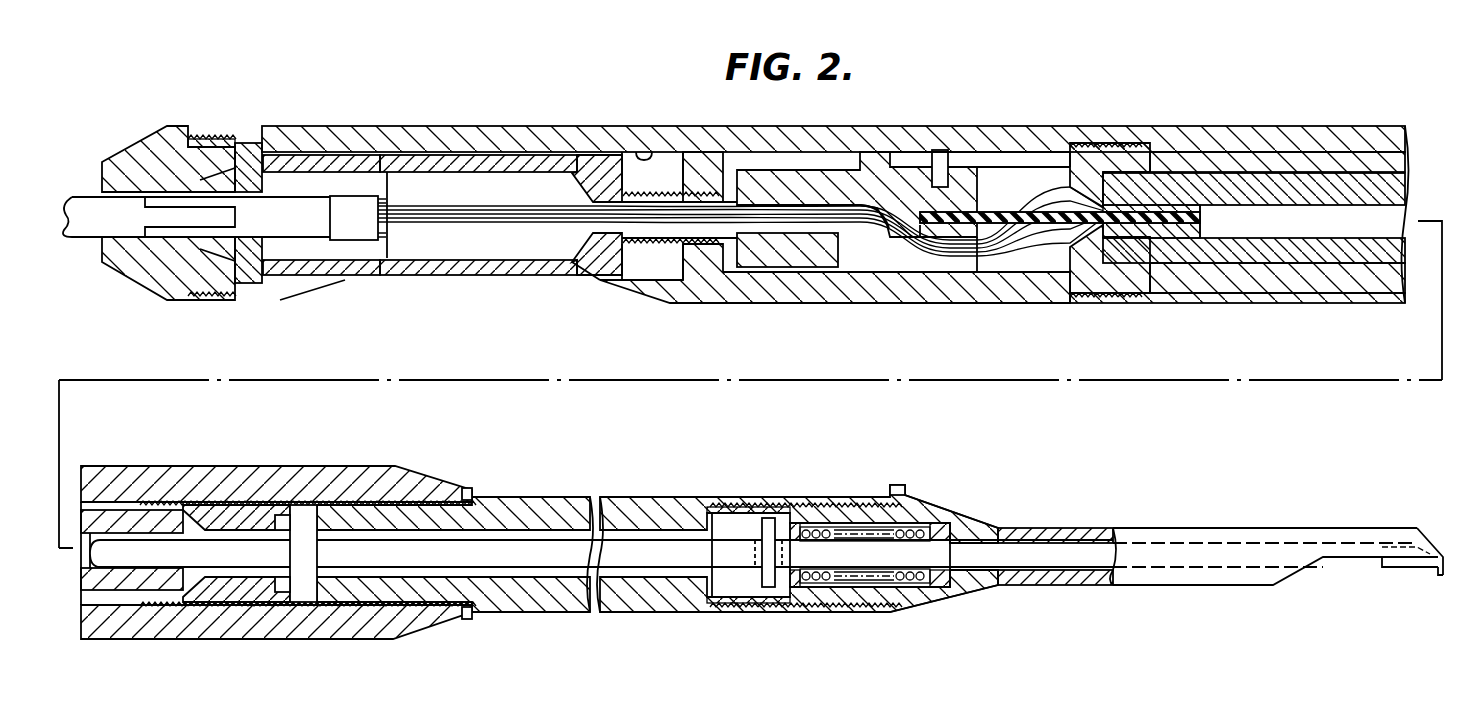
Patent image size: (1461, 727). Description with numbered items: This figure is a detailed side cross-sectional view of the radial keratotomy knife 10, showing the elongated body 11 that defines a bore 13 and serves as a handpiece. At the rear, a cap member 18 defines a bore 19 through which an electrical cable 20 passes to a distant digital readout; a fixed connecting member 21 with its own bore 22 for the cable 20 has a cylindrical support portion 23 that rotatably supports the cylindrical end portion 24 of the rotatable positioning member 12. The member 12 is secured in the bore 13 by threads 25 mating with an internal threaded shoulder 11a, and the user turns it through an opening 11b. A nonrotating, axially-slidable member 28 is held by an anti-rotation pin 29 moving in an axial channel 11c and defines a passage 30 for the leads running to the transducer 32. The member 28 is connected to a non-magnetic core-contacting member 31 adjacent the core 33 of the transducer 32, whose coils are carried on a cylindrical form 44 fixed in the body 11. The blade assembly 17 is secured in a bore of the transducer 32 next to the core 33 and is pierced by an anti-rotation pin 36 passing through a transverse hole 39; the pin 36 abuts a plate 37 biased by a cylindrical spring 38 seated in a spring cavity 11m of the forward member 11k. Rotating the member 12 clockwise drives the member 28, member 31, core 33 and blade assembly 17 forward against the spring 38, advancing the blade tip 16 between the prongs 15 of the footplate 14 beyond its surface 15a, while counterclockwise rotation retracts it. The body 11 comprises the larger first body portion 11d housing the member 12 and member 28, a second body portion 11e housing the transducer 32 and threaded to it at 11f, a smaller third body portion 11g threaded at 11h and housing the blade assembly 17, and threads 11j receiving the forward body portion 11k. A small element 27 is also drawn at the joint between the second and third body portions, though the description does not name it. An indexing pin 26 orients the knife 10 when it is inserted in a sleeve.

The radial keratotomy knife 10 is at (337, 78).
The elongated body 11 is at (690, 140).
The internal threaded shoulder 11a is at (715, 170).
The opening 11b is at (345, 305).
The axial channel 11c is at (1010, 150).
The first body portion 11d is at (413, 138).
The second body portion 11e is at (385, 468).
The threaded connection 11f is at (1133, 140).
The third body portion 11g is at (548, 600).
The threaded connection 11h is at (445, 510).
The threads 11j is at (835, 500).
The forward body portion 11k is at (982, 524).
The spring cavity 11m is at (875, 592).
The rotatable positioning member 12 is at (502, 158).
The bore 13 is at (644, 152).
The footplate 14 is at (1253, 532).
The prongs 15 is at (1421, 538).
The footplate surface 15a is at (1445, 576).
The blade tip 16 is at (1398, 569).
The blade assembly 17 is at (1060, 582).
The cap member 18 is at (123, 162).
The bore 19 is at (600, 280).
The electrical cable 20 is at (88, 234).
The fixed connecting member 21 is at (241, 134).
The bore 22 is at (283, 150).
The cylindrical support portion 23 is at (366, 195).
The cylindrical end portion 24 is at (325, 158).
The threads 25 is at (663, 246).
The indexing pin 26 is at (906, 492).
The retaining ring 27 is at (472, 492).
The nonrotating axially-slidable member 28 is at (818, 168).
The anti-rotation pin 29 is at (938, 150).
The passage 30 is at (880, 200).
The core-contacting member 31 is at (1010, 210).
The transducer 32 is at (1318, 264).
The core 33 is at (1300, 230).
The anti-rotation pin 36 is at (768, 598).
The plate 37 is at (790, 598).
The cylindrical spring 38 is at (915, 588).
The transverse hole 39 is at (748, 578).
The cylindrical form 44 is at (1410, 186).